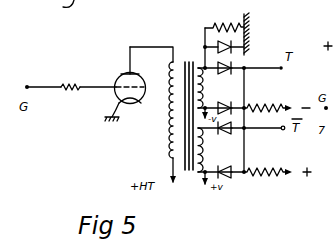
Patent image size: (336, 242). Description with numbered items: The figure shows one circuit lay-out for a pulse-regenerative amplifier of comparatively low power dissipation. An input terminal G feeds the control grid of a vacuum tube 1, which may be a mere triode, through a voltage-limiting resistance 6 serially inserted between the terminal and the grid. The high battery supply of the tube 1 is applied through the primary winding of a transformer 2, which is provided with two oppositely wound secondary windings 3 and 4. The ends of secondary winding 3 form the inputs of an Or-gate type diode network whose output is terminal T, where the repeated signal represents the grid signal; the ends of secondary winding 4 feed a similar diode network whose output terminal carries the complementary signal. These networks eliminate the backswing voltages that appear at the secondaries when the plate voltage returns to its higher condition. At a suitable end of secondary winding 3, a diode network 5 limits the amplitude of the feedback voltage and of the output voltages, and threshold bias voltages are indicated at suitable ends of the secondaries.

The vacuum tube 1 is at (125, 84).
The transformer 2 is at (188, 59).
The secondary winding 3 is at (213, 88).
The secondary winding 4 is at (213, 150).
The diode network 5 is at (233, 22).
The voltage-limiting resistance 6 is at (75, 74).